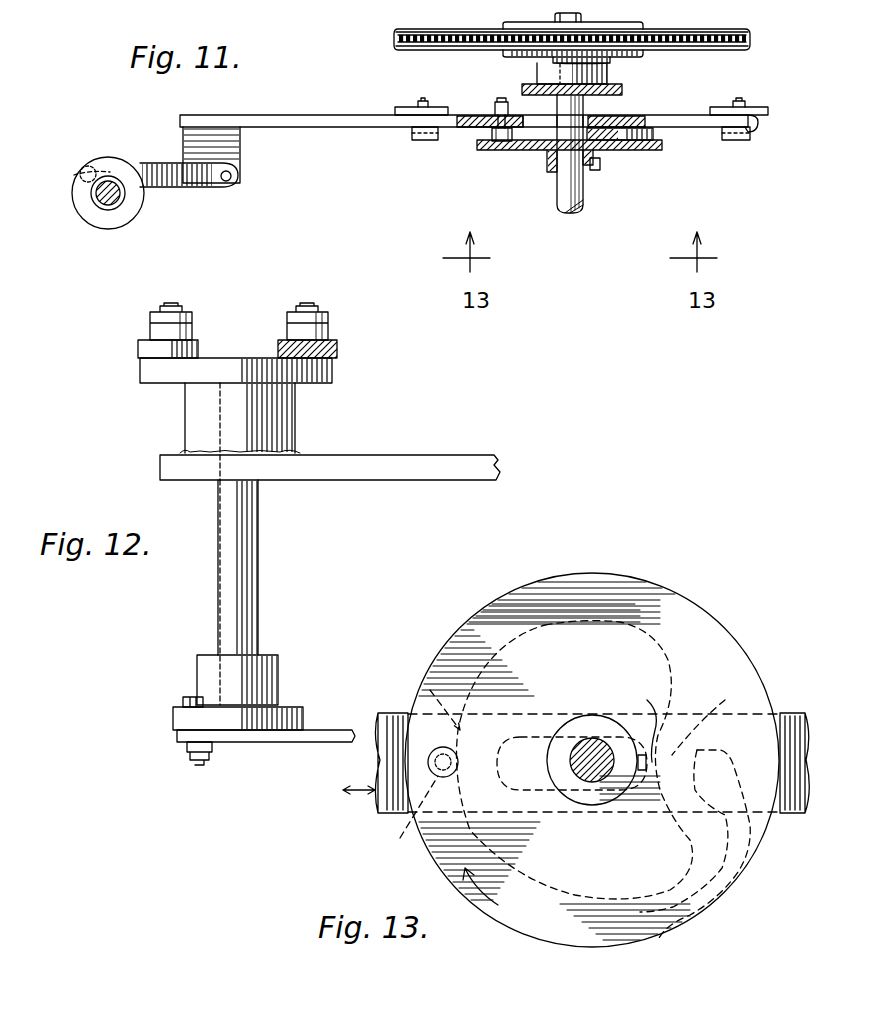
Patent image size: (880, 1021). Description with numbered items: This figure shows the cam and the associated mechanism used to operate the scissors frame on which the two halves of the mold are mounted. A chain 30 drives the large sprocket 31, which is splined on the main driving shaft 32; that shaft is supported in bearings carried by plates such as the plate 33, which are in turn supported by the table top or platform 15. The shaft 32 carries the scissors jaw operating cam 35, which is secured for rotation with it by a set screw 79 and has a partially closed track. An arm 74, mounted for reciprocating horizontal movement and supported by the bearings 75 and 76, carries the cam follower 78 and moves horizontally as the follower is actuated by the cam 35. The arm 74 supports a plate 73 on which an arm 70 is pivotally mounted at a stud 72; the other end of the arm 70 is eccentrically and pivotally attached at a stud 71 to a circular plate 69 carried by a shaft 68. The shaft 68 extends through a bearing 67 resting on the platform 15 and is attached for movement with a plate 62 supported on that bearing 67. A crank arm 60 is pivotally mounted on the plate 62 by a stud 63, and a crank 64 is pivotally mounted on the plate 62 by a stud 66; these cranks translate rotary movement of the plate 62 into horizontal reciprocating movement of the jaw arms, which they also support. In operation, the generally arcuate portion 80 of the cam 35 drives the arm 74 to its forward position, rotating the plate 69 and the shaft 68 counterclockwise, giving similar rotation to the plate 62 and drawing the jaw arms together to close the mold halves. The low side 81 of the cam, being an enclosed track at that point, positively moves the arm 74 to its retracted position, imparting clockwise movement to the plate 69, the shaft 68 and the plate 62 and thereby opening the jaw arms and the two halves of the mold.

In FIG. 12, the table top 15 is at (370, 460).
In FIG. 11, the chain 30 is at (748, 31).
In FIG. 11, the large sprocket 31 is at (510, 26).
In FIG. 11, the main driving shaft 32 is at (556, 205).
In FIG. 13, the main driving shaft 32 is at (572, 775).
In FIG. 11, the plate 33 is at (623, 92).
In FIG. 11, the scissors jaw operating cam 35 is at (663, 146).
In FIG. 13, the scissors jaw operating cam 35 is at (696, 608).
In FIG. 12, the crank arm 60 is at (135, 348).
In FIG. 12, the plate 62 is at (148, 383).
In FIG. 12, the stud 63 is at (176, 307).
In FIG. 12, the crank 64 is at (338, 348).
In FIG. 12, the stud 66 is at (312, 307).
In FIG. 12, the bearing 67 is at (182, 436).
In FIG. 11, the shaft 68 is at (102, 208).
In FIG. 12, the shaft 68 is at (250, 528).
In FIG. 11, the circular plate 69 is at (117, 222).
In FIG. 12, the circular plate 69 is at (172, 722).
In FIG. 11, the arm 70 is at (145, 163).
In FIG. 12, the arm 70 is at (298, 745).
In FIG. 11, the stud 71 is at (84, 168).
In FIG. 12, the stud 71 is at (198, 766).
In FIG. 11, the stud 72 is at (232, 176).
In FIG. 11, the plate 73 is at (240, 152).
In FIG. 11, the arm 74 is at (292, 122).
In FIG. 13, the arm 74 is at (390, 712).
In FIG. 11, the bearing 75 is at (420, 122).
In FIG. 11, the bearing 76 is at (746, 122).
In FIG. 11, the cam follower 78 is at (494, 135).
In FIG. 13, the cam follower 78 is at (400, 836).
In FIG. 11, the set screw 79 is at (600, 172).
In FIG. 13, the set screw 79 is at (636, 721).
In FIG. 11, the arcuate portion 80 is at (499, 145).
In FIG. 13, the arcuate portion 80 is at (420, 672).
In FIG. 11, the low side of the cam 81 is at (608, 150).
In FIG. 13, the low side of the cam 81 is at (709, 716).